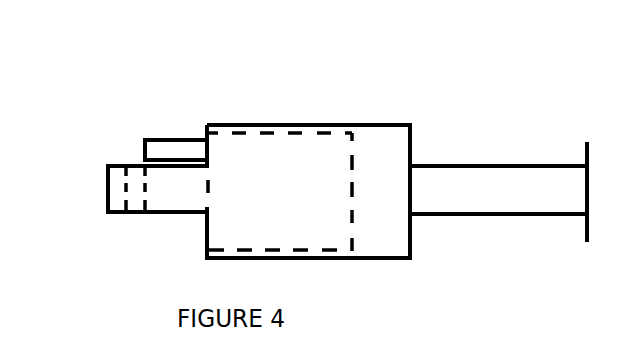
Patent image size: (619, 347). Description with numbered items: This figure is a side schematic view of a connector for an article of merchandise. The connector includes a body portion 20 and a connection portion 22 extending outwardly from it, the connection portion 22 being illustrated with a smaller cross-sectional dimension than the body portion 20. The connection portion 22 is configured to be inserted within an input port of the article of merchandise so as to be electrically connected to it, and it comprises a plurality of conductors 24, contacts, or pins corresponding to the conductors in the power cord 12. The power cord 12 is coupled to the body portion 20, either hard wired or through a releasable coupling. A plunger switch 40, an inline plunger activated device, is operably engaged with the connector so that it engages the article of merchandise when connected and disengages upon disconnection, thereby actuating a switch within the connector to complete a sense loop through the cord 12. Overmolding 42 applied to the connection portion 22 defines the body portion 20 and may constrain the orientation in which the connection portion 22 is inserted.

The power cord 12 is at (507, 213).
The body portion 20 is at (247, 127).
The connection portion 22 is at (148, 215).
The conductors 24 is at (123, 187).
The plunger switch 40 is at (142, 147).
The overmolding 42 is at (412, 139).